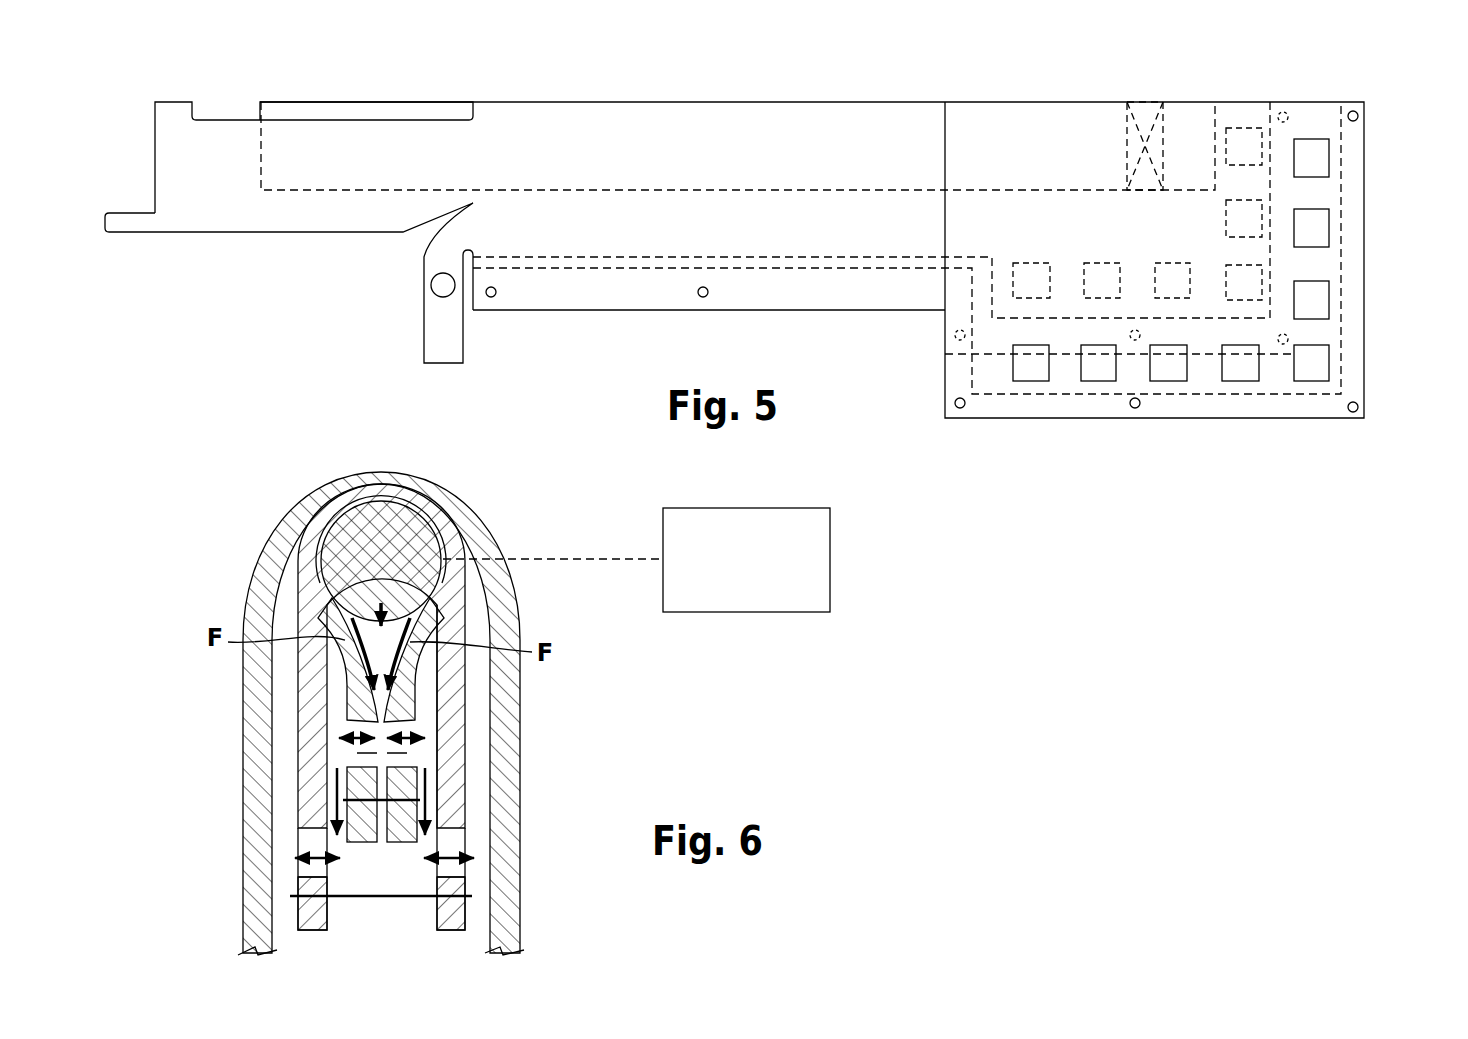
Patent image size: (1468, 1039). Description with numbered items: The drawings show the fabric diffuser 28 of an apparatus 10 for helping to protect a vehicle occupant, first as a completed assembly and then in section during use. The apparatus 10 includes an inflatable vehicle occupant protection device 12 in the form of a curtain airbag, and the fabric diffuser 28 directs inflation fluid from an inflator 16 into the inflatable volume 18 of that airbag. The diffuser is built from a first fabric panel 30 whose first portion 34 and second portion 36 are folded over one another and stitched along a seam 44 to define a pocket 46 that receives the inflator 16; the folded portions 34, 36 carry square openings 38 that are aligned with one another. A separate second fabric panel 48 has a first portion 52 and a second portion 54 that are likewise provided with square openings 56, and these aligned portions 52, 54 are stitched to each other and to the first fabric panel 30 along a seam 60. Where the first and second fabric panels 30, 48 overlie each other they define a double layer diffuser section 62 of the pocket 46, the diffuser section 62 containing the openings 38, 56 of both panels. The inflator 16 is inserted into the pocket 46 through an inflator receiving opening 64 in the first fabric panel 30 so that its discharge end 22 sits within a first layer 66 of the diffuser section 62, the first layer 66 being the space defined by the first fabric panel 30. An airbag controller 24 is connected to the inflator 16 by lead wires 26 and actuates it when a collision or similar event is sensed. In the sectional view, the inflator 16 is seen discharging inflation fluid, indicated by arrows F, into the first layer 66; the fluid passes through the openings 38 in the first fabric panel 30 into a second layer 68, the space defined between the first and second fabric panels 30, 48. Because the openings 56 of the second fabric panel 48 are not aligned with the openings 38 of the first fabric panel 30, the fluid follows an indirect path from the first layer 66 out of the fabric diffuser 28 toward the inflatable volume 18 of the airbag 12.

In FIG. 6, the apparatus 10 is at (290, 505).
In FIG. 6, the inflatable vehicle occupant protection device 12 is at (506, 916).
In FIG. 5, the inflator 16 is at (362, 112).
In FIG. 6, the inflator 16 is at (413, 522).
In FIG. 6, the inflatable volume 18 is at (476, 910).
In FIG. 5, the discharge end 22 is at (1147, 115).
In FIG. 6, the airbag controller 24 is at (830, 575).
In FIG. 6, the lead wires 26 is at (600, 556).
In FIG. 5, the fabric diffuser 28 is at (786, 138).
In FIG. 6, the fabric diffuser 28 is at (305, 557).
In FIG. 5, the first fabric panel 30 is at (790, 296).
In FIG. 6, the first fabric panel 30 is at (452, 815).
In FIG. 5, the first portion of the first fabric panel 34 is at (838, 291).
In FIG. 6, the first portion of the first fabric panel 34 is at (350, 680).
In FIG. 5, the second portion of the first fabric panel 36 is at (1366, 215).
In FIG. 6, the second portion of the first fabric panel 36 is at (410, 680).
In FIG. 5, the openings 38 is at (1243, 128).
In FIG. 6, the openings 38 is at (305, 762).
In FIG. 5, the seam 44 is at (553, 258).
In FIG. 6, the seam 44 is at (405, 810).
In FIG. 5, the pocket 46 is at (1007, 148).
In FIG. 6, the pocket 46 is at (381, 600).
In FIG. 5, the second fabric panel 48 is at (1353, 368).
In FIG. 6, the second fabric panel 48 is at (297, 812).
In FIG. 5, the first portion of the second fabric panel 52 is at (1331, 408).
In FIG. 6, the first portion of the second fabric panel 52 is at (300, 730).
In FIG. 5, the second portion of the second fabric panel 54 is at (1366, 258).
In FIG. 6, the second portion of the second fabric panel 54 is at (440, 755).
In FIG. 5, the openings 56 is at (1330, 155).
In FIG. 6, the openings 56 is at (307, 870).
In FIG. 5, the seam 60 is at (592, 268).
In FIG. 6, the seam 60 is at (310, 900).
In FIG. 5, the diffuser section 62 is at (1060, 135).
In FIG. 6, the diffuser section 62 is at (466, 613).
In FIG. 5, the inflator receiving opening 64 is at (233, 120).
In FIG. 5, the first layer 66 is at (1240, 192).
In FIG. 6, the first layer 66 is at (342, 614).
In FIG. 5, the second layer 68 is at (1204, 372).
In FIG. 6, the second layer 68 is at (336, 717).